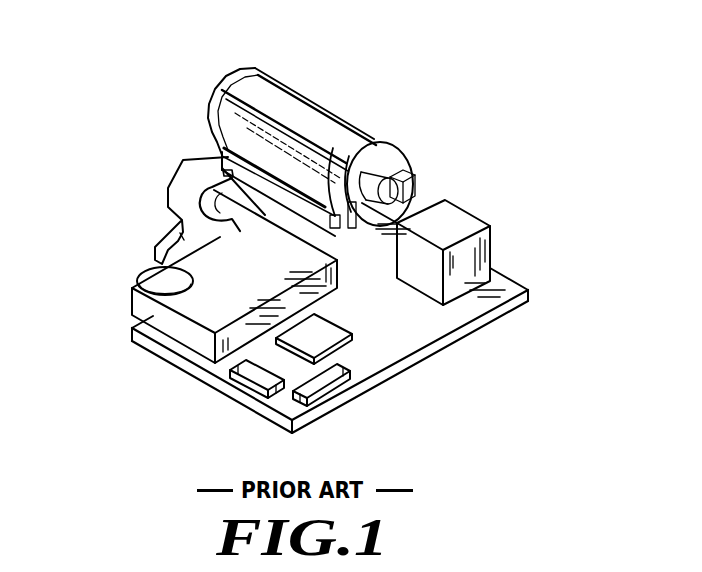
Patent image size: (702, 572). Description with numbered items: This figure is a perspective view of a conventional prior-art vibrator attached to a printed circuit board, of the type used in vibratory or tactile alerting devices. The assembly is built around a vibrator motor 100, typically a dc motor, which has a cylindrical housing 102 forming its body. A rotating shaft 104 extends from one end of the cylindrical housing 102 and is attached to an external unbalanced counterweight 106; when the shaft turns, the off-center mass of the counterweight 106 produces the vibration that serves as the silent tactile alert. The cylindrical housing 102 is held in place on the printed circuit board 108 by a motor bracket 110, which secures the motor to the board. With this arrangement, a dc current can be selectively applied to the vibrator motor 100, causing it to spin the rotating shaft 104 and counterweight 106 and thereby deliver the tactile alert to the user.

The vibrator motor 100 is at (403, 80).
The cylindrical housing 102 is at (288, 108).
The rotating shaft 104 is at (399, 174).
The external unbalanced counterweight 106 is at (412, 187).
The printed circuit board 108 is at (430, 335).
The motor bracket 110 is at (212, 131).